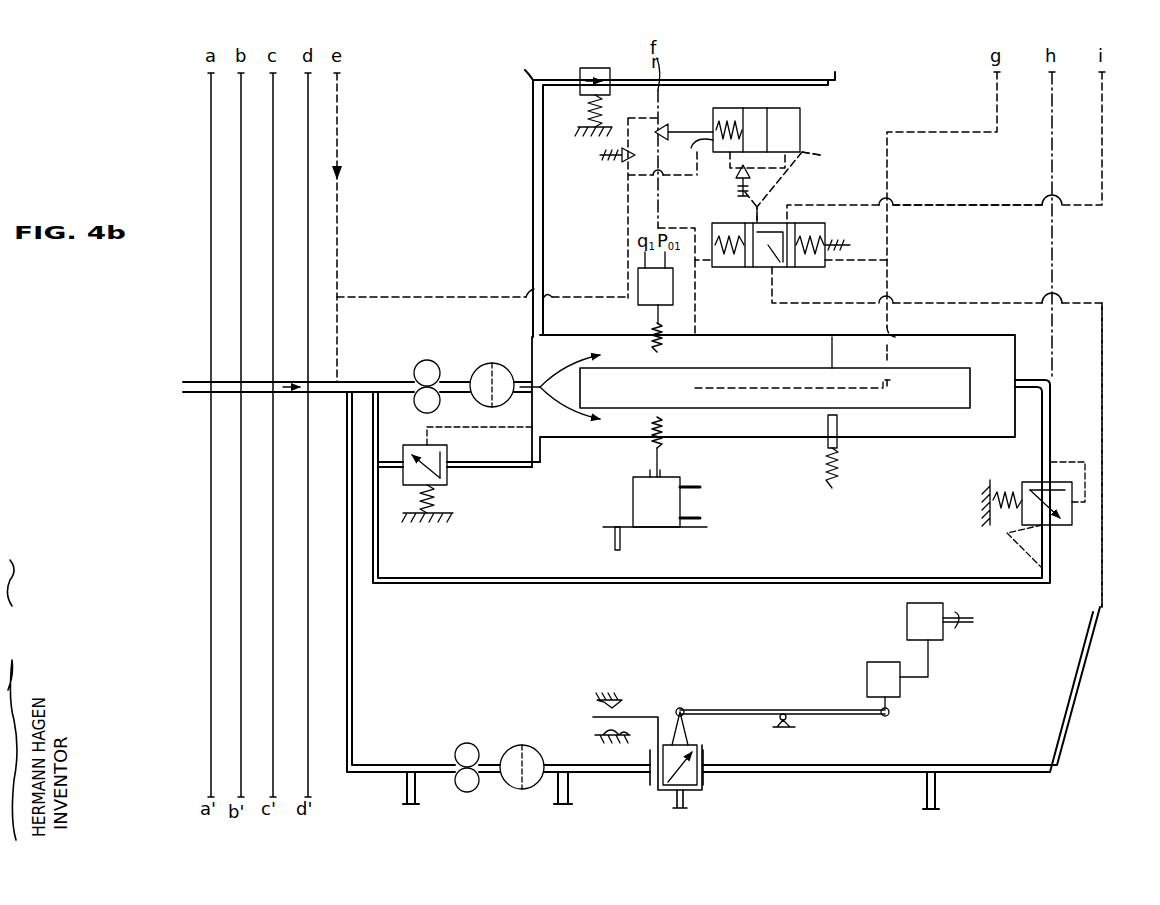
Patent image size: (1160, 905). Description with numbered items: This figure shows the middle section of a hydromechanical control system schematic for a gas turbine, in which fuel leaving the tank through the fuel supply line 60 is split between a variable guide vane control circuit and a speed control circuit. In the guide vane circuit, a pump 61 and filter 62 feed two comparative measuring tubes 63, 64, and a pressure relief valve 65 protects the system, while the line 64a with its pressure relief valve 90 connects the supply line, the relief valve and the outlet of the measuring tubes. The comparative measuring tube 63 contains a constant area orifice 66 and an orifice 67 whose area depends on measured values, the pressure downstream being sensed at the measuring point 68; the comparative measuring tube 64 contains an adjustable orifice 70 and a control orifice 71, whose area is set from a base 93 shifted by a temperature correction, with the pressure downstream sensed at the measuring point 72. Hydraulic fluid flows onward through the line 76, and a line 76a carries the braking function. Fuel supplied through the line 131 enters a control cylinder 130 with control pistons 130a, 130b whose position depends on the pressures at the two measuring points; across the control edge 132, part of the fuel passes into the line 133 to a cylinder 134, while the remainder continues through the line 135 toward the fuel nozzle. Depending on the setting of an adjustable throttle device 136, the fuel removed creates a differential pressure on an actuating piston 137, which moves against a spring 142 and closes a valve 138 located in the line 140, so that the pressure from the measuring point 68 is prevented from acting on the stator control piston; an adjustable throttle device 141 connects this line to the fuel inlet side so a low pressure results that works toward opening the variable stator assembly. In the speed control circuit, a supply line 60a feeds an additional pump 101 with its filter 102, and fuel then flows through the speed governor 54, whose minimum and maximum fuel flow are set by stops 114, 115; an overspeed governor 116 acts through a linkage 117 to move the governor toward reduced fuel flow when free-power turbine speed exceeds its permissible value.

The speed governor 54 is at (703, 751).
The fuel supply line 60 is at (186, 382).
The supply line 60a is at (352, 637).
The pump 61 is at (417, 362).
The filter 62 is at (490, 363).
The comparative measuring tube 63 is at (778, 335).
The comparative measuring tube 64 is at (770, 437).
The line 64a is at (787, 578).
The pressure relief valve 65 is at (447, 455).
The constant area orifice 66 is at (835, 368).
The orifice 67 is at (664, 345).
The measuring point 68 is at (697, 331).
The adjustable orifice 70 is at (838, 442).
The control orifice 71 is at (664, 443).
The measuring point 72 is at (696, 392).
The line 76 is at (675, 80).
The line 76a is at (535, 75).
The pressure relief valve 90 is at (1032, 482).
The base 93 is at (618, 527).
The pump 101 is at (465, 743).
The filter 102 is at (536, 728).
The stop 114 is at (595, 735).
The stop 115 is at (617, 699).
The overspeed governor 116 is at (907, 620).
The linkage 117 is at (782, 705).
The control cylinder 130 is at (790, 260).
The control piston 130a is at (741, 267).
The control piston 130b is at (800, 267).
The line 131 is at (1104, 471).
The control edge 132 is at (753, 215).
The line 133 is at (820, 155).
The cylinder 134 is at (773, 117).
The line 135 is at (937, 205).
The adjustable throttle device 136 is at (736, 178).
The actuating piston 137 is at (754, 114).
The valve 138 is at (664, 123).
The line 140 is at (659, 212).
The adjustable throttle device 141 is at (604, 157).
The spring 142 is at (684, 151).